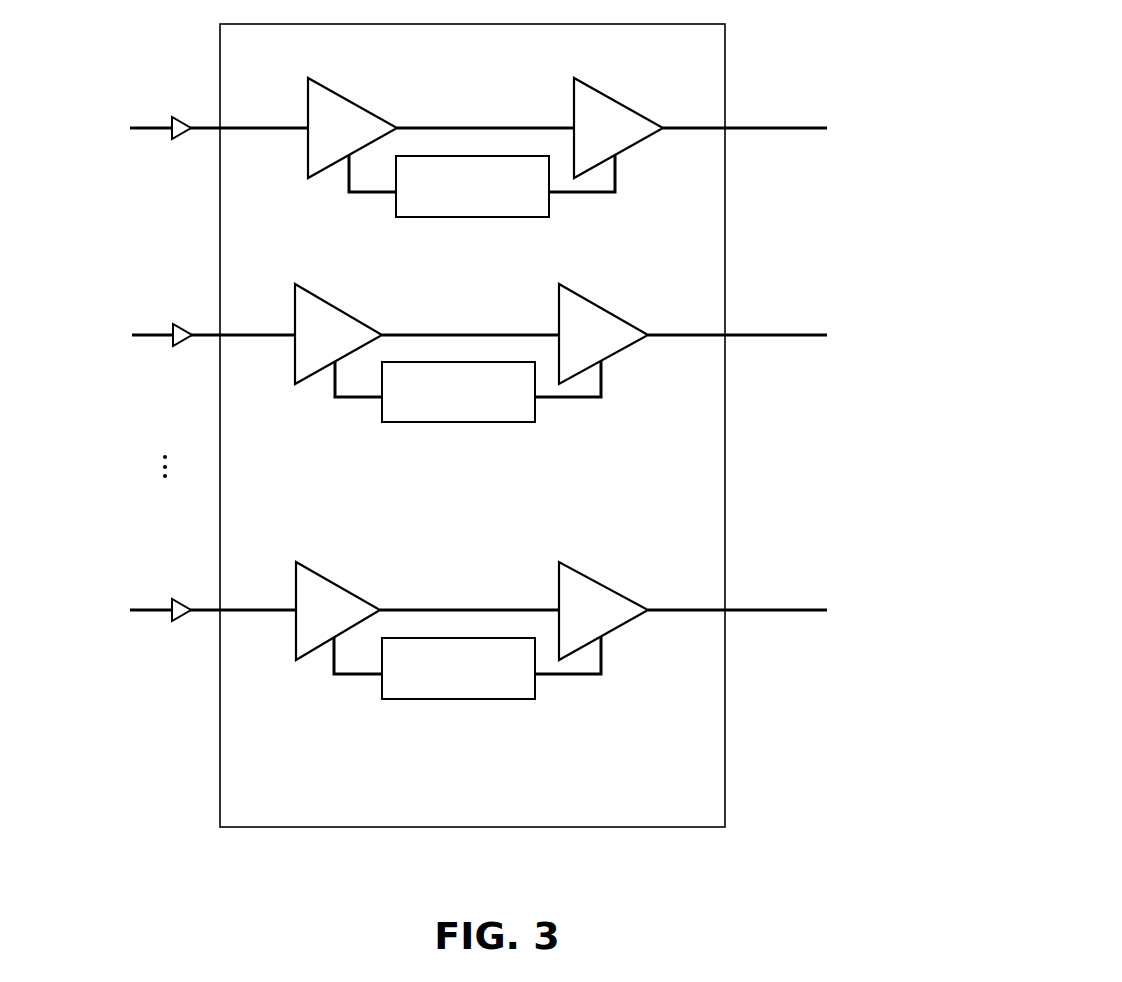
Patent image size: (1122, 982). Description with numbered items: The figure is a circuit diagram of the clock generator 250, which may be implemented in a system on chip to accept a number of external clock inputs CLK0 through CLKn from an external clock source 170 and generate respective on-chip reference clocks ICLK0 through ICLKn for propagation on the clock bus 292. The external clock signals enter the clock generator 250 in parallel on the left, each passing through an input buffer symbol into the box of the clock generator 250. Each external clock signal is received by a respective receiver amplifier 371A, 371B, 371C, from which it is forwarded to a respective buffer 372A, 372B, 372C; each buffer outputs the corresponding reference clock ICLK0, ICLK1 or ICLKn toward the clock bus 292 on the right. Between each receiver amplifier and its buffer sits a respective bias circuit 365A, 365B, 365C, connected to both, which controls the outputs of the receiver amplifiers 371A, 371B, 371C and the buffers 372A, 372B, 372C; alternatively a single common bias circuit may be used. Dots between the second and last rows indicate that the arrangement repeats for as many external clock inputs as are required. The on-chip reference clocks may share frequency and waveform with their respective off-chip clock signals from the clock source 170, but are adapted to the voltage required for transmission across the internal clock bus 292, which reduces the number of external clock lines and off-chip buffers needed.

The clock generator 250 is at (450, 813).
The clock source 170 is at (174, 356).
The clock bus 292 is at (788, 351).
The receiver amplifier 371A is at (347, 96).
The receiver amplifier 371B is at (330, 304).
The receiver amplifier 371C is at (330, 582).
The buffer 372A is at (603, 93).
The buffer 372B is at (590, 301).
The buffer 372C is at (590, 579).
The bias circuit 365A is at (443, 212).
The bias circuit 365B is at (429, 417).
The bias circuit 365C is at (429, 694).